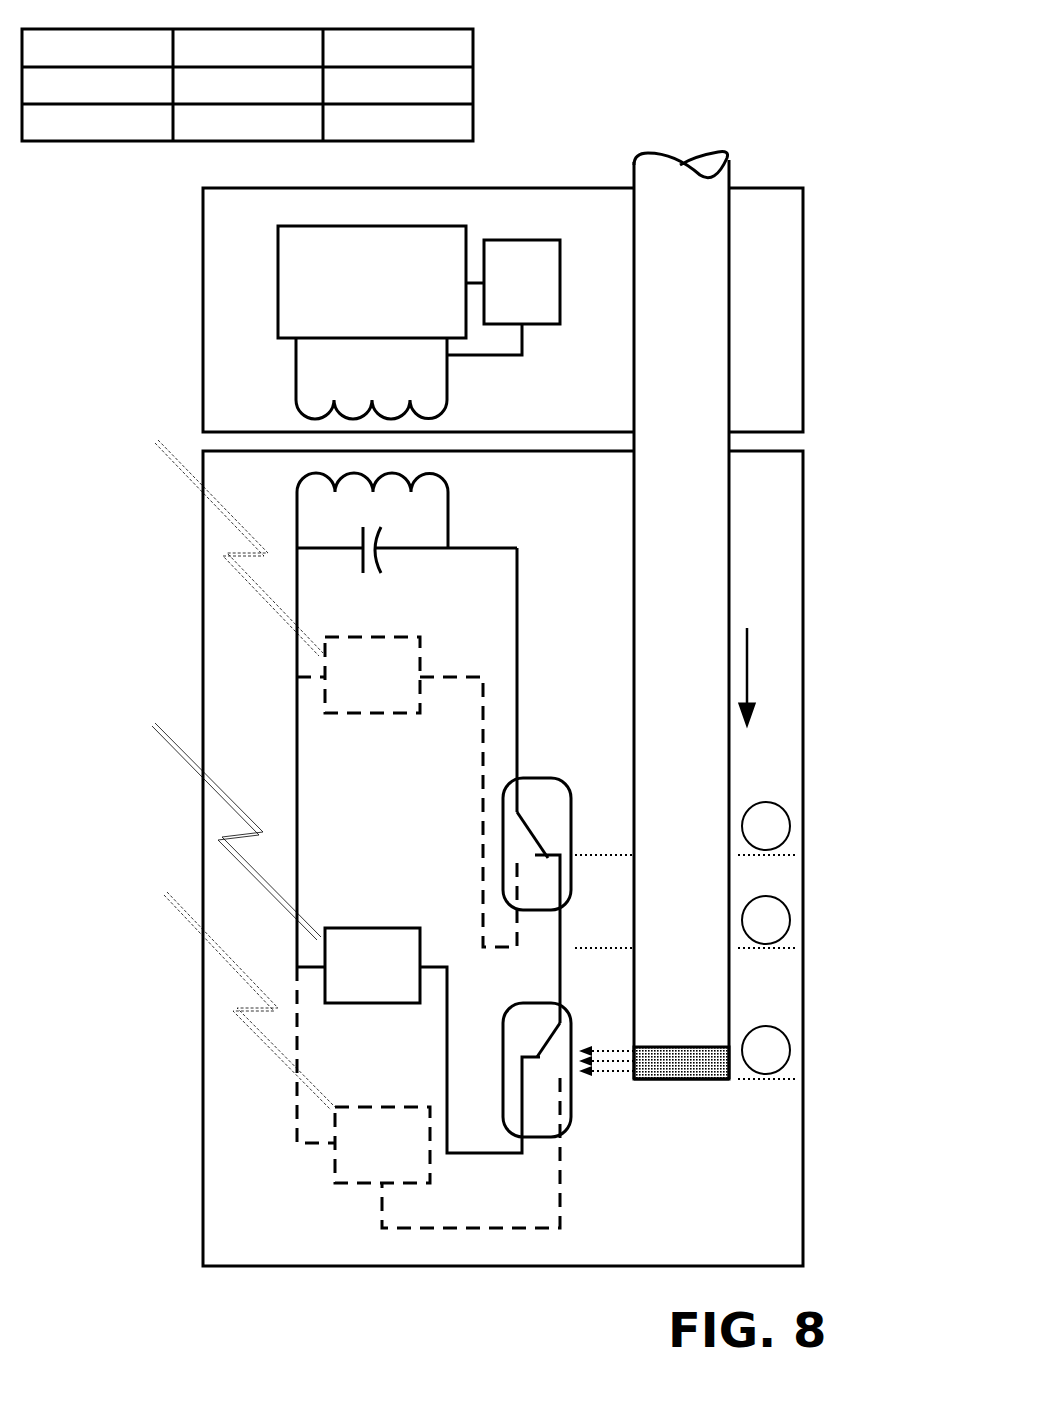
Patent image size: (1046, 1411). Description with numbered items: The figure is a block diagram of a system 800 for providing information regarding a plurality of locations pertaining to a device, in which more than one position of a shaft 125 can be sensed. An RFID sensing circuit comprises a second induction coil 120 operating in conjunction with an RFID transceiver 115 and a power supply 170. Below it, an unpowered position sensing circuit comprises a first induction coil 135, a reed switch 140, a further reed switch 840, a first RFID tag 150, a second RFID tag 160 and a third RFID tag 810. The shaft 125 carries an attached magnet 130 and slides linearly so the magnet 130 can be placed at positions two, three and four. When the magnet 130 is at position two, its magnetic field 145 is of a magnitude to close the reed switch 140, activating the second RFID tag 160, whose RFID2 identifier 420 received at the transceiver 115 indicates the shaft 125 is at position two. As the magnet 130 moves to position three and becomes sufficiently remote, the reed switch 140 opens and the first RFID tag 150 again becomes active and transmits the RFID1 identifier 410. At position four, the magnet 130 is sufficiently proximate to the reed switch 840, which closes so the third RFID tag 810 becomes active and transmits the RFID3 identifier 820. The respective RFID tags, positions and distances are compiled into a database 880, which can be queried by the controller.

The system for providing information regarding a plurality of locations 800 is at (811, 62).
The database 880 is at (491, 68).
The RFID transceiver 115 is at (381, 282).
The power supply 170 is at (503, 297).
The second induction coil 120 is at (296, 386).
The shaft 125 is at (634, 276).
The first induction coil 135 is at (297, 518).
The second RFID tag 160 is at (407, 792).
The reed switch 140 is at (574, 779).
The third RFID tag 810 is at (418, 1040).
The reed switch 840 is at (562, 1012).
The first RFID tag 150 is at (428, 1097).
The magnetic field 145 is at (620, 1074).
The magnet 130 is at (680, 1082).
The RFID2 identifier 420 is at (183, 518).
The RFID3 identifier 820 is at (179, 801).
The RFID1 identifier 410 is at (190, 969).